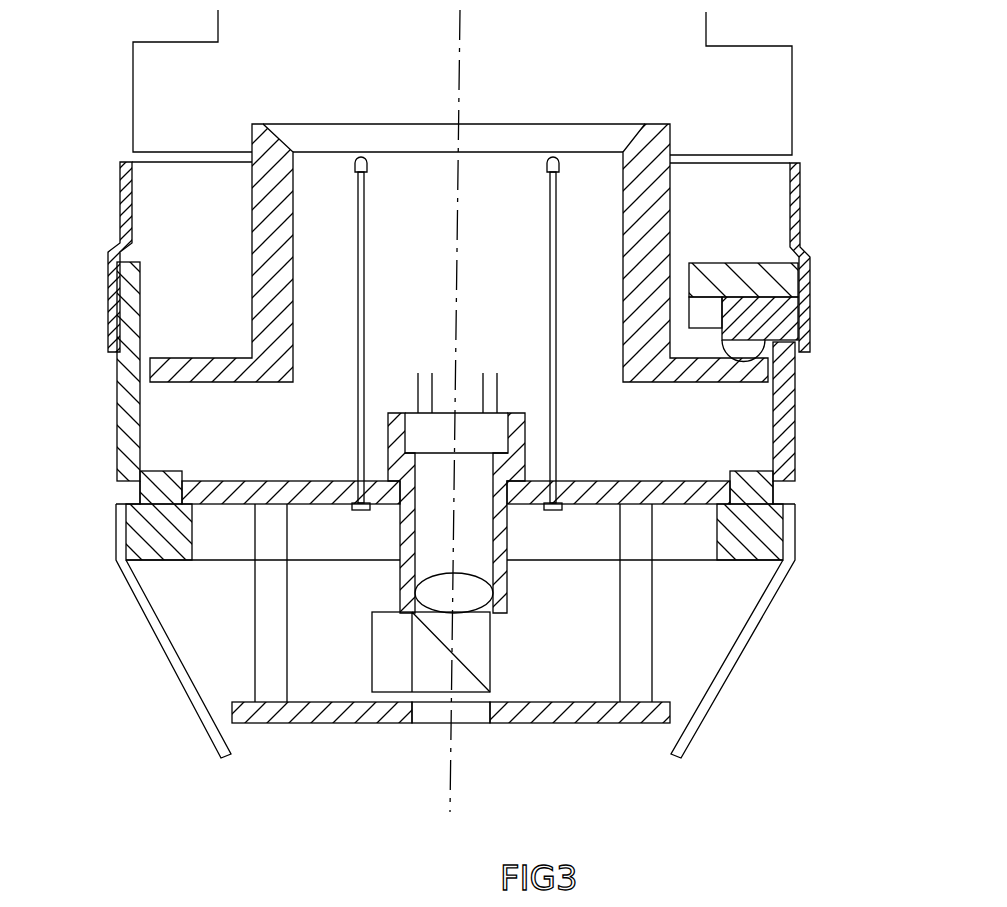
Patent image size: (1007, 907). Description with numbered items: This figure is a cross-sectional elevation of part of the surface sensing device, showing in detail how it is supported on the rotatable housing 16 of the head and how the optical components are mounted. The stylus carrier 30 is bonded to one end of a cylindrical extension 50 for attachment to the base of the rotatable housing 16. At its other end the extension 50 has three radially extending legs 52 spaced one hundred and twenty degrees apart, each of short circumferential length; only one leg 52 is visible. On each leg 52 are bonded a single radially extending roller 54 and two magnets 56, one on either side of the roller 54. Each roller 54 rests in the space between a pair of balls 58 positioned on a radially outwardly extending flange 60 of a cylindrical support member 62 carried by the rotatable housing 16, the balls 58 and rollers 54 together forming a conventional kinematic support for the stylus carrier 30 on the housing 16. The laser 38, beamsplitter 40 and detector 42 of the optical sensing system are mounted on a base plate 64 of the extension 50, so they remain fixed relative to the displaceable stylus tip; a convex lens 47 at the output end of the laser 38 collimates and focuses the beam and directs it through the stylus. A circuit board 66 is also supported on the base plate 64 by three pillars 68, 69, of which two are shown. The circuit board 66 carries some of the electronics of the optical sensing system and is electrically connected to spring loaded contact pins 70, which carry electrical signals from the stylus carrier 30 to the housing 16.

The rotatable housing 16 is at (752, 73).
The stylus carrier 30 is at (733, 657).
The laser 38 is at (425, 532).
The beamsplitter 40 is at (423, 668).
The detector 42 is at (382, 648).
The convex lens 47 is at (473, 595).
The cylindrical extension 50 is at (797, 432).
The radially extending leg 52 is at (783, 282).
The roller 54 is at (782, 318).
The magnet 56 is at (702, 308).
The ball 58 is at (745, 352).
The radially outwardly extending flange 60 is at (740, 377).
The cylindrical support member 62 is at (258, 215).
The base plate 64 is at (687, 493).
The circuit board 66 is at (633, 717).
The pillar 68 is at (638, 623).
The pillar 69 is at (265, 605).
The spring loaded contact pin 70 is at (355, 418).